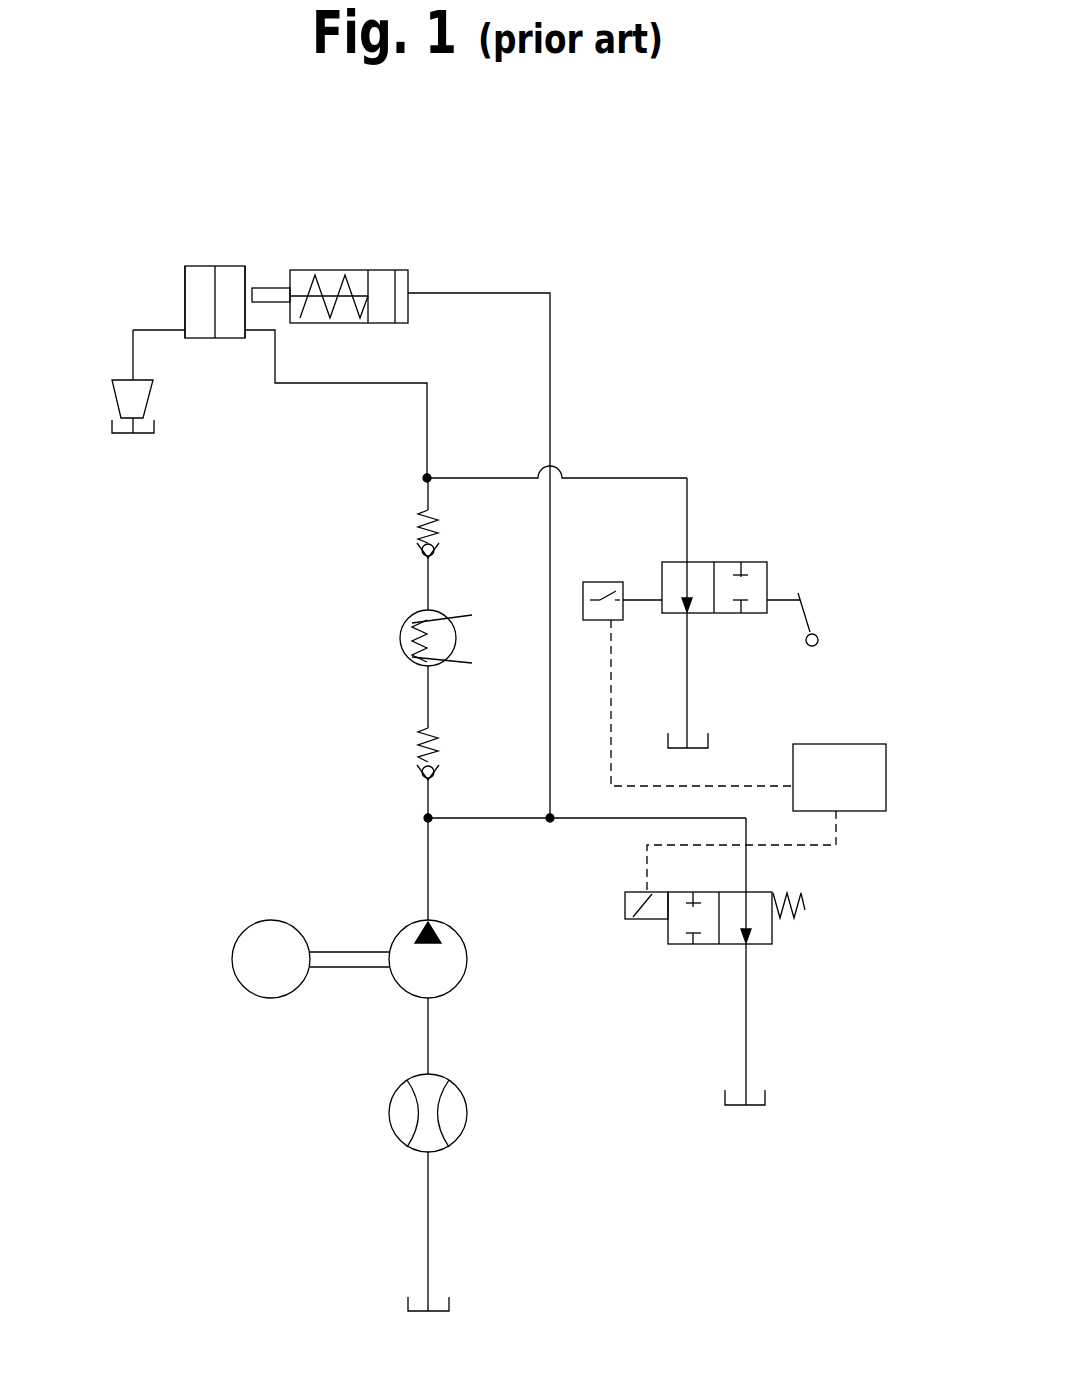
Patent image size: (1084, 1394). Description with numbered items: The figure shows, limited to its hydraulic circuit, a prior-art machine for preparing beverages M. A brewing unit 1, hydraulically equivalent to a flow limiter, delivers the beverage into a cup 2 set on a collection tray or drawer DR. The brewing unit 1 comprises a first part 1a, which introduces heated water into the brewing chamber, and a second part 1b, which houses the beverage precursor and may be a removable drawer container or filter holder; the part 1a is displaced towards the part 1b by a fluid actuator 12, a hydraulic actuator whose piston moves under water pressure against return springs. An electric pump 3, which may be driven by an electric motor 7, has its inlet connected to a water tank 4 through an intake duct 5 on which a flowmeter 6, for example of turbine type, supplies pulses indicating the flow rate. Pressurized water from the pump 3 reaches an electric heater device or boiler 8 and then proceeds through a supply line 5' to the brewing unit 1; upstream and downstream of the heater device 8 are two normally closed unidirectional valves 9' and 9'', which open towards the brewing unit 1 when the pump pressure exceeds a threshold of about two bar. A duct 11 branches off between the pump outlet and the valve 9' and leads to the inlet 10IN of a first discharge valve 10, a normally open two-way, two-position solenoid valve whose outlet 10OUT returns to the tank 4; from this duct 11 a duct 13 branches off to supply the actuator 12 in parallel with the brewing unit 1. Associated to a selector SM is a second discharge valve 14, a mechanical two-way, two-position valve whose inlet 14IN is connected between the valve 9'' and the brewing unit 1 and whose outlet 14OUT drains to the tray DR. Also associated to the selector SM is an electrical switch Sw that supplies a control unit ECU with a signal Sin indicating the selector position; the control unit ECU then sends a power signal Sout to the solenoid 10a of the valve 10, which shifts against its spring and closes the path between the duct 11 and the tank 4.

The machine for preparing beverages M is at (705, 261).
The brewing unit 1 is at (211, 311).
The first part of the brewing unit 1a is at (232, 270).
The second part of the brewing unit 1b is at (195, 273).
The cup 2 is at (120, 390).
The collection tray or drawer DR is at (142, 438).
The fluid actuator 12 is at (376, 256).
The supply line 5' is at (336, 404).
The duct for supply of the actuator 13 is at (553, 400).
The duct 11 is at (480, 816).
The unidirectional hydraulic valve 9'' is at (373, 544).
The electric heater device or boiler 8 is at (413, 665).
The unidirectional hydraulic valve 9' is at (367, 784).
The electric pump 3 is at (453, 969).
The electric motor 7 is at (271, 980).
The flowmeter 6 is at (462, 1117).
The intake duct 5 is at (377, 1231).
The water tank 4 is at (437, 1312).
The inlet of the second discharge valve 14IN is at (690, 548).
The second discharge valve 14 is at (754, 545).
The electrical switch Sw is at (603, 580).
The selector SM is at (820, 609).
The outlet of the second discharge valve 14OUT is at (688, 667).
The signal indicating the selector position Sin is at (613, 707).
The control unit ECU is at (840, 758).
The power signal Sout is at (835, 840).
The inlet of the first discharge valve 10IN is at (746, 875).
The first discharge valve 10 is at (776, 954).
The solenoid 10a is at (657, 917).
The outlet of the first discharge valve 10OUT is at (744, 960).